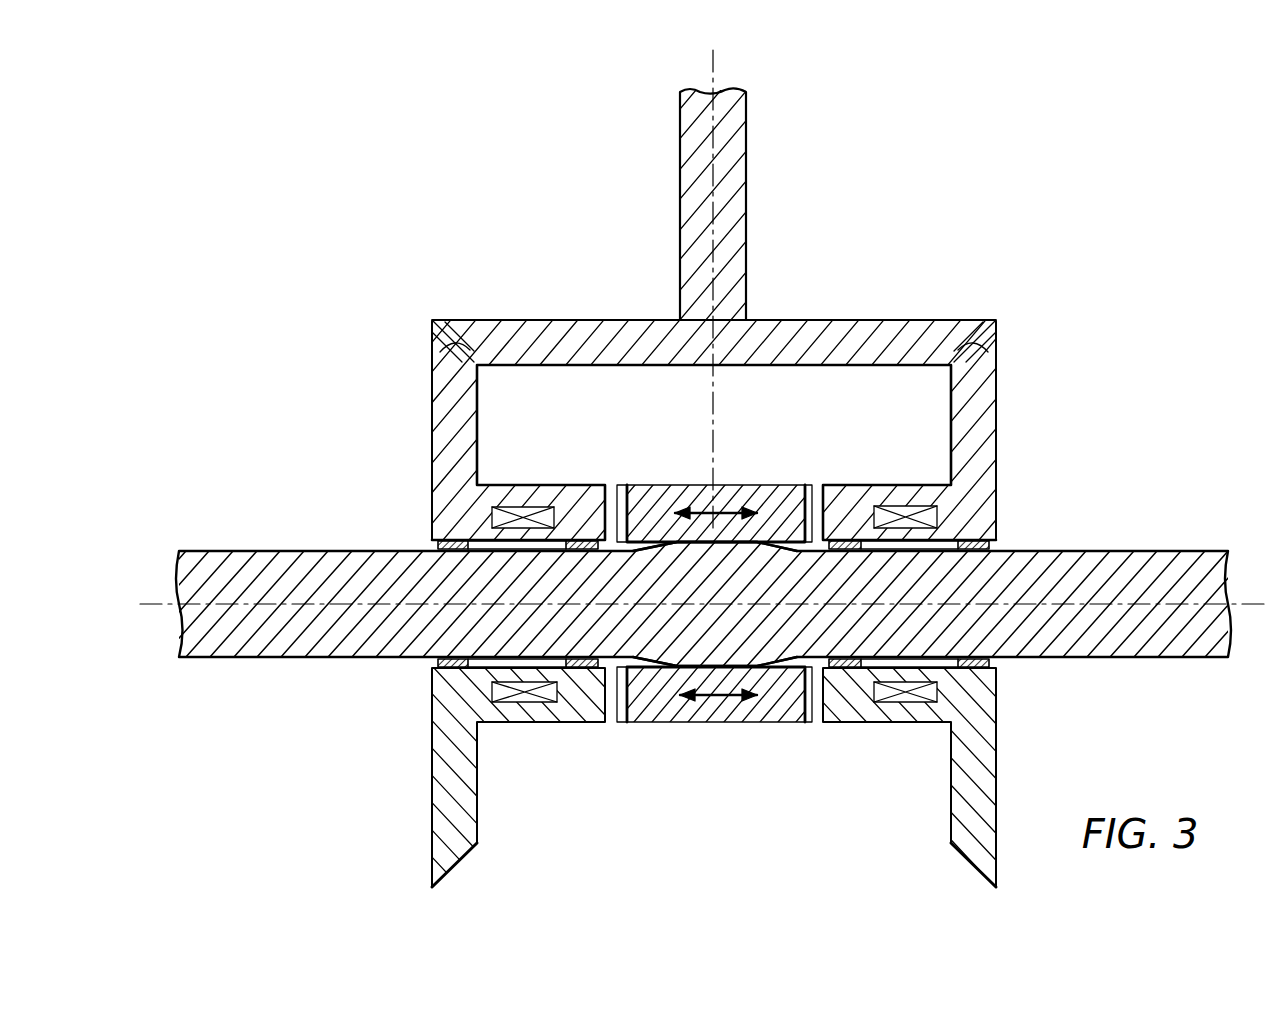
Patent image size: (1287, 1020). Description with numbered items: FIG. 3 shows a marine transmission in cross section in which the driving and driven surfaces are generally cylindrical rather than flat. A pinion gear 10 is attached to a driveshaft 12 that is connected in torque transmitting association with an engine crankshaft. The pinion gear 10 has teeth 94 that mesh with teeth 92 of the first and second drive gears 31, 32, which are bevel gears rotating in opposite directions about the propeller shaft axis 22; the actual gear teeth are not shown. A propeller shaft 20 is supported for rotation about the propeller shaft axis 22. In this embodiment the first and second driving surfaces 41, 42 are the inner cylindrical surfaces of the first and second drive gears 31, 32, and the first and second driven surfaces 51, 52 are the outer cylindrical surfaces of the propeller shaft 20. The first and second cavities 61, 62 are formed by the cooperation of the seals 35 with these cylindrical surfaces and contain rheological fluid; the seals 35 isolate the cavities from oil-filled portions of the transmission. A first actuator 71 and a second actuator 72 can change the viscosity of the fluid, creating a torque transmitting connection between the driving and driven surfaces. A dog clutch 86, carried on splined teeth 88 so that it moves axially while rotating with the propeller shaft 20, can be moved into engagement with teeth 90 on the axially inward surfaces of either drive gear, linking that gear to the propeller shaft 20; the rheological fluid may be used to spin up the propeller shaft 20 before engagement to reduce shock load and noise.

The pinion gear 10 is at (858, 318).
The driveshaft 12 is at (748, 205).
The propeller shaft 20 is at (1145, 552).
The propeller shaft axis 22 is at (1265, 608).
The first drive gear 31 is at (438, 430).
The second drive gear 32 is at (990, 445).
The seals 35 is at (437, 545).
The first driving surface 41 is at (527, 546).
The second driving surface 42 is at (918, 546).
The first driven surface 51 is at (478, 548).
The second driven surface 52 is at (945, 548).
The first cavity 61 is at (497, 553).
The second cavity 62 is at (880, 553).
The first actuator 71 is at (534, 508).
The second actuator 72 is at (905, 506).
The dog clutch 86 is at (712, 723).
The splined teeth 88 is at (735, 552).
The teeth 90 is at (611, 490).
The teeth 92 is at (470, 352).
The teeth 94 is at (462, 346).